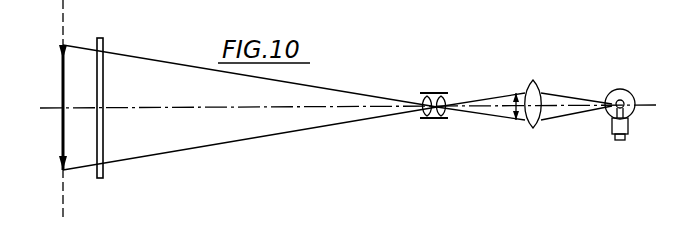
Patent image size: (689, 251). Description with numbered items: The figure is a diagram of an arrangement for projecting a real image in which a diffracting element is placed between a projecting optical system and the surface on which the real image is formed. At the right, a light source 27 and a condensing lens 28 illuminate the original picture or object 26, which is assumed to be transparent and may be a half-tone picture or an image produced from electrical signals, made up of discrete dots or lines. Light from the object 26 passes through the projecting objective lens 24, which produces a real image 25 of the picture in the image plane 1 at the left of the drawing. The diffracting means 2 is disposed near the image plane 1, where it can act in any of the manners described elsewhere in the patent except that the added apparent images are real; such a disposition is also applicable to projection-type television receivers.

The image plane 1 is at (63, 13).
The diffracting means 2 is at (96, 65).
The projecting objective lens 24 is at (429, 94).
The real image 25 is at (63, 137).
The object 26 is at (516, 119).
The light source 27 is at (617, 91).
The condensing lens 28 is at (535, 96).